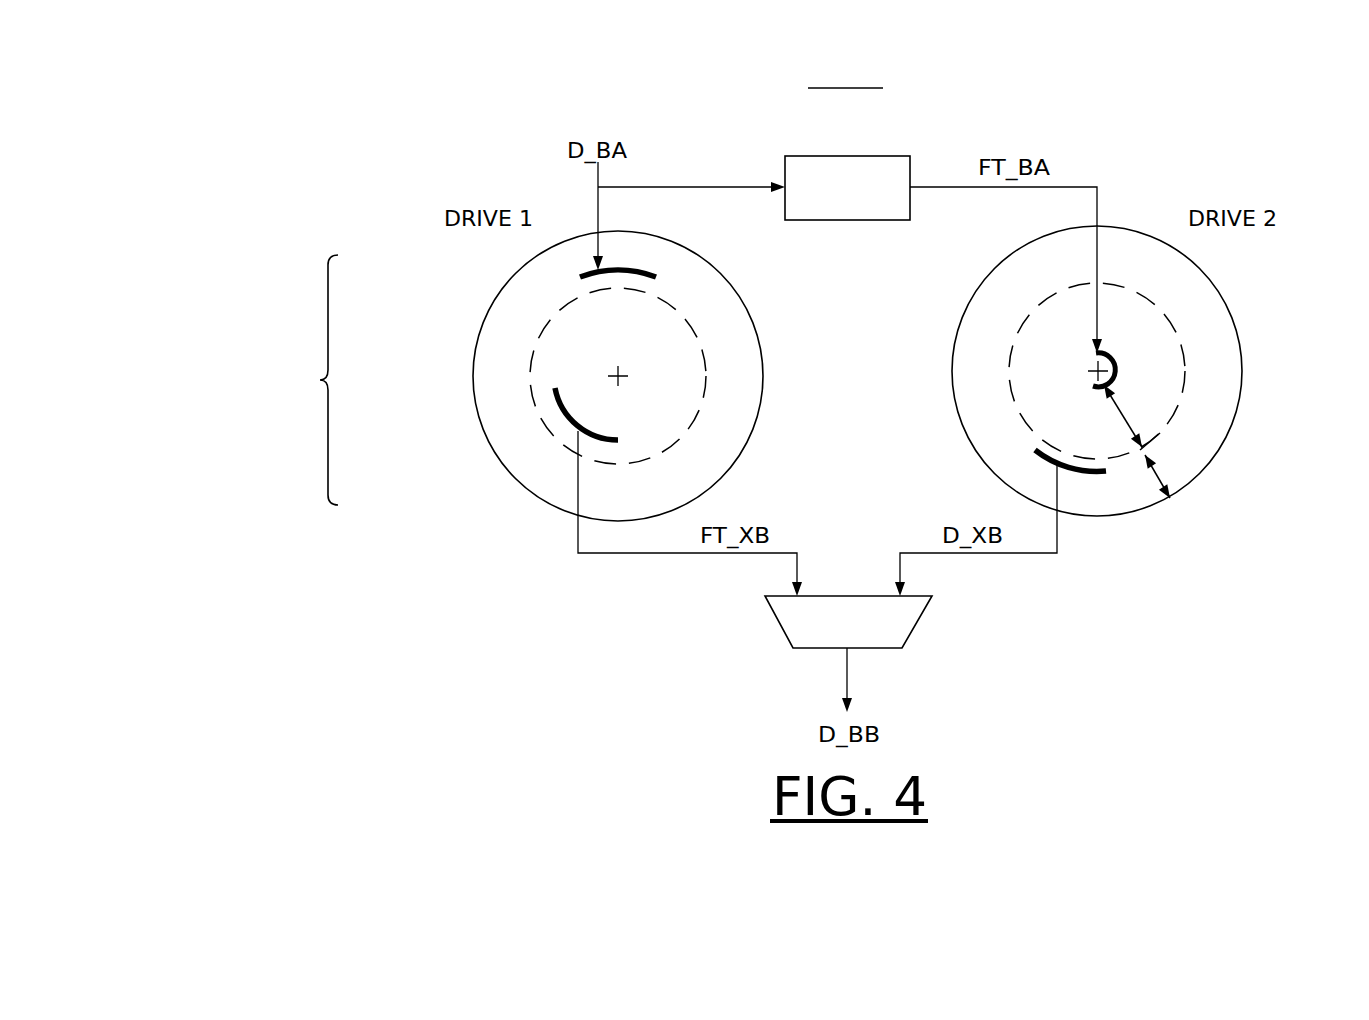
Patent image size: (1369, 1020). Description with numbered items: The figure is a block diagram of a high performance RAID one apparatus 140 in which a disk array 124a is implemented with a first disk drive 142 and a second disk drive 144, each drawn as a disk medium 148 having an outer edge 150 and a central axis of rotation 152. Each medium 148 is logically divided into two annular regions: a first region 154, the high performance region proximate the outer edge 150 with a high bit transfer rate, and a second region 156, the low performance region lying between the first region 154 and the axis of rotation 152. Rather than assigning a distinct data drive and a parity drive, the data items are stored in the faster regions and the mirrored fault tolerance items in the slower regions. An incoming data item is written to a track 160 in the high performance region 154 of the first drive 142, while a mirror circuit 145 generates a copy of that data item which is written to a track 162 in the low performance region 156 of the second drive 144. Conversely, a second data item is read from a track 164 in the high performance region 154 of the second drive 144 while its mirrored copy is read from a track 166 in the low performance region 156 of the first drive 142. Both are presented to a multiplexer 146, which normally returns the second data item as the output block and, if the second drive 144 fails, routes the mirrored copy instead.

The high performance RAID 1 apparatus 140 is at (447, 72).
The disk array 124a is at (298, 380).
The first disk drive 142 is at (525, 265).
The second disk drive 144 is at (1192, 262).
The circuit 145 is at (815, 156).
The multiplexer 146 is at (892, 648).
The disk medium 148 is at (1029, 263).
The outer edge 150 is at (962, 294).
The axis of rotation 152 is at (1080, 368).
The first region 154 is at (1157, 477).
The second region 156 is at (1128, 422).
The track 160 is at (657, 277).
The track 162 is at (1117, 370).
The track 164 is at (1034, 453).
The track 166 is at (556, 396).